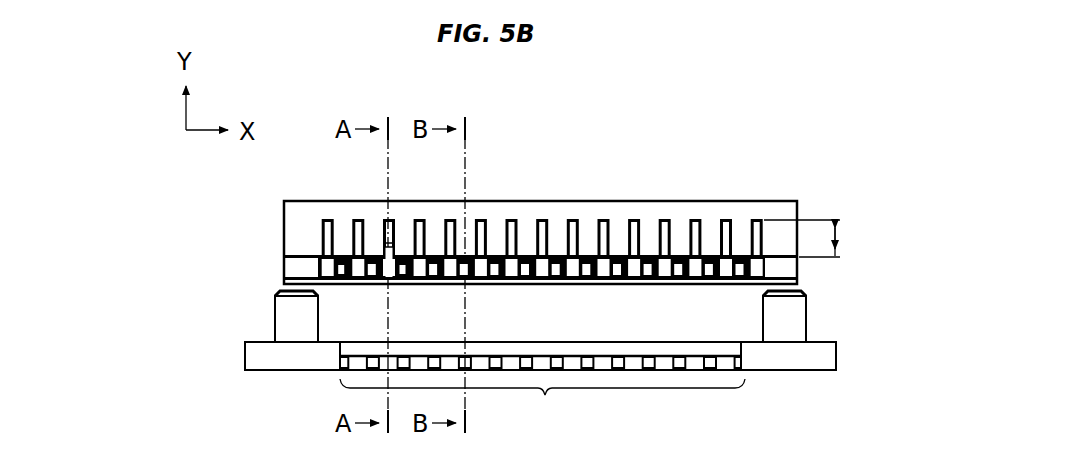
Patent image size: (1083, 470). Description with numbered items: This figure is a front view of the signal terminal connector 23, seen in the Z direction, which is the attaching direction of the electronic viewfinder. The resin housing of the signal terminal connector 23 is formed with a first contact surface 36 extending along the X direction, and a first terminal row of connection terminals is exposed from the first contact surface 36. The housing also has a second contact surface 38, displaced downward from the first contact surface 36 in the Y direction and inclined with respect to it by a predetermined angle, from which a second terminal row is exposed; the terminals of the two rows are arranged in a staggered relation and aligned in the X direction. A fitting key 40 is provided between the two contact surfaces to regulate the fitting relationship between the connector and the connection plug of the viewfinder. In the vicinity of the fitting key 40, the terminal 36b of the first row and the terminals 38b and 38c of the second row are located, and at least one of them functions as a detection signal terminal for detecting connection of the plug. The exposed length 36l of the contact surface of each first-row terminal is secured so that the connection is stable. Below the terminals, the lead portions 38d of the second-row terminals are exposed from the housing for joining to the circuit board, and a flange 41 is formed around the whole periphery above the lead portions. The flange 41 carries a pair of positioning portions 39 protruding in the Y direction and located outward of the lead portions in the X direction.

The signal terminal connector 23 is at (724, 179).
The first contact surface 36 is at (633, 200).
The terminal 36b is at (383, 233).
The exposed length 36l is at (824, 238).
The second contact surface 38 is at (787, 272).
The terminal 38b is at (333, 267).
The terminal 38c is at (407, 253).
The lead portion 38d is at (542, 390).
The positioning portion 39 is at (278, 312).
The fitting key 40 is at (382, 253).
The flange 41 is at (822, 351).